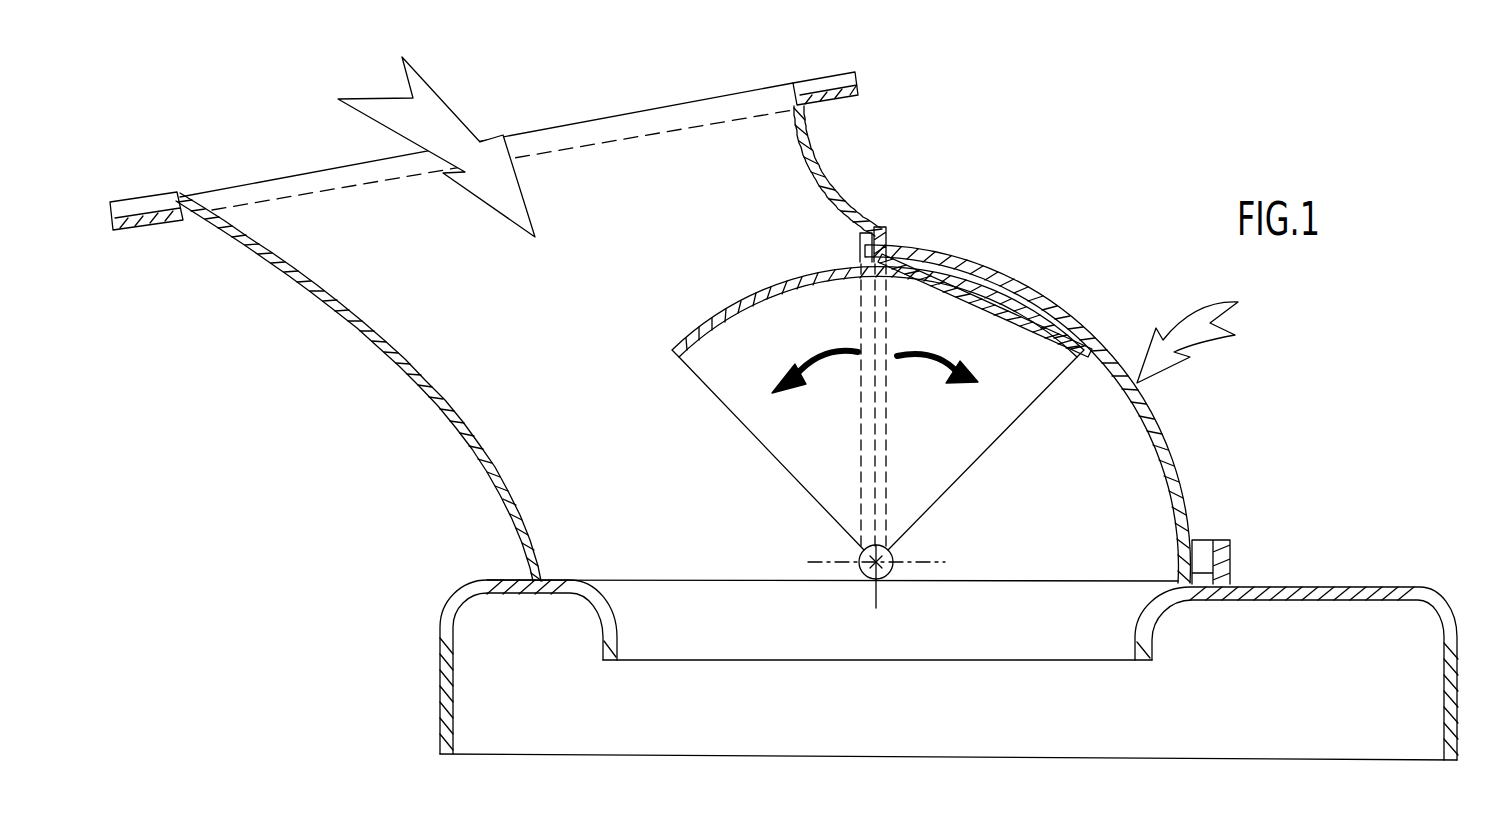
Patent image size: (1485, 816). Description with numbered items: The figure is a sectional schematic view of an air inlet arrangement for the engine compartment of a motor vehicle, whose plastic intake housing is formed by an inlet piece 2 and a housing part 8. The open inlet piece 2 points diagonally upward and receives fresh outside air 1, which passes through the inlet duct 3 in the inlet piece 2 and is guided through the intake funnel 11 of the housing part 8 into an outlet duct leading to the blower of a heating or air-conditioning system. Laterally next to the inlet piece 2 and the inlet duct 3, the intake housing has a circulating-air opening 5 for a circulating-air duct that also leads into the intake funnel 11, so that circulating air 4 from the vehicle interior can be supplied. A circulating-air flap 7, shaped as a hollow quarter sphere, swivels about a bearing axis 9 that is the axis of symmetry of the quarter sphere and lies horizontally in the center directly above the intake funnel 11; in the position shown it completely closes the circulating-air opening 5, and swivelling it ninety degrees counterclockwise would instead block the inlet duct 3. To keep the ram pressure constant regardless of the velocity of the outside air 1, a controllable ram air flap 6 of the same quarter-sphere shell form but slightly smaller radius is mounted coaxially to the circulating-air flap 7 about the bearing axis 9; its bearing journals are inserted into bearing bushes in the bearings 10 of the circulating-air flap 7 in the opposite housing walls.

The fresh outside air 1 is at (438, 108).
The inlet piece 2 is at (744, 101).
The inlet duct 3 is at (594, 410).
The circulating air 4 is at (1207, 332).
The circulating-air opening 5 is at (1200, 506).
The ram air flap 6 is at (712, 322).
The circulating-air flap 7 is at (1025, 285).
The housing part 8 is at (1328, 590).
The bearing axis 9 is at (874, 566).
The bearings 10 is at (846, 553).
The intake funnel 11 is at (1004, 647).